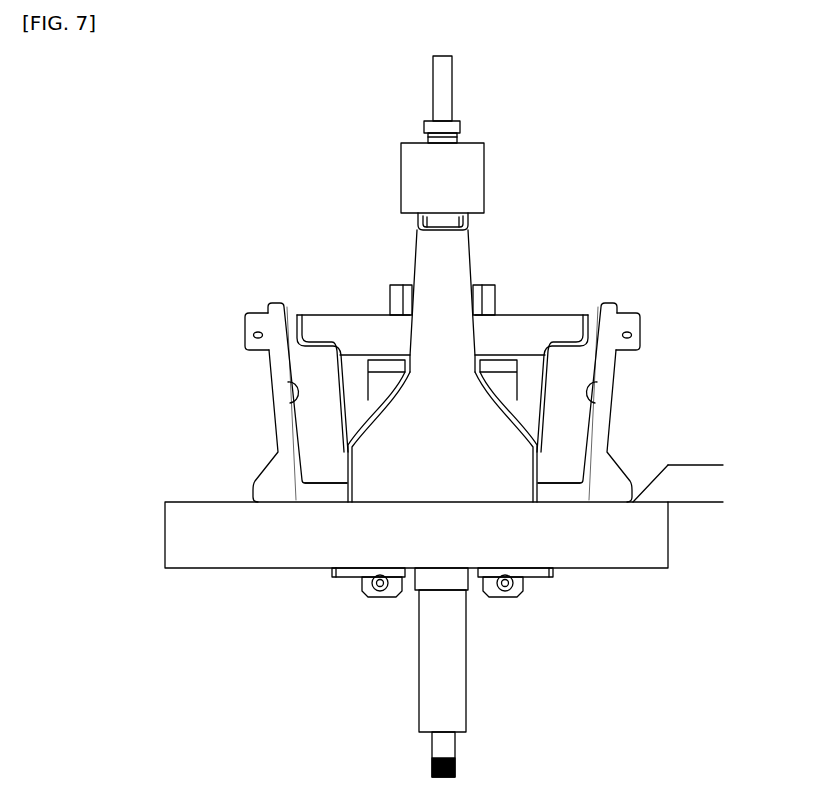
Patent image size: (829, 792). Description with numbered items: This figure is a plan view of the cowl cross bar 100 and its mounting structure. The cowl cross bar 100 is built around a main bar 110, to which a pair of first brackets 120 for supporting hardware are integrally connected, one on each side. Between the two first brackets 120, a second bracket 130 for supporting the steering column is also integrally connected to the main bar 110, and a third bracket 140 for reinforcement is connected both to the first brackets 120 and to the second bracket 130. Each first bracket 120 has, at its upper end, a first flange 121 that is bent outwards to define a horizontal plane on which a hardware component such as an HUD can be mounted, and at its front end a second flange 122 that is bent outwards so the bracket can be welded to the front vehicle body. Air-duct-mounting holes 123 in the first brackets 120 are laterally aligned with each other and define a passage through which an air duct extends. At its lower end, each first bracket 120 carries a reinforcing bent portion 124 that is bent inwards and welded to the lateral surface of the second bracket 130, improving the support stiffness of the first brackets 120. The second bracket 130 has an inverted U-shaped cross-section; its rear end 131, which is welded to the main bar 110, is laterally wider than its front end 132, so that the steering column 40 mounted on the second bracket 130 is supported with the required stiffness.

The steering column 40 is at (406, 284).
The cowl cross bar 100 is at (444, 621).
The main bar 110 is at (357, 540).
The first bracket for supporting hardware 120 is at (438, 424).
The first flange 121 is at (283, 435).
The second flange 122 is at (250, 327).
The air-duct-mounting hole 123 is at (287, 405).
The reinforcing bent portion 124 is at (325, 495).
The second bracket for supporting steering column 130 is at (480, 238).
The rear end of the second bracket 131 is at (487, 478).
The front end of the second bracket 132 is at (452, 282).
The third bracket for reinforcement 140 is at (342, 328).